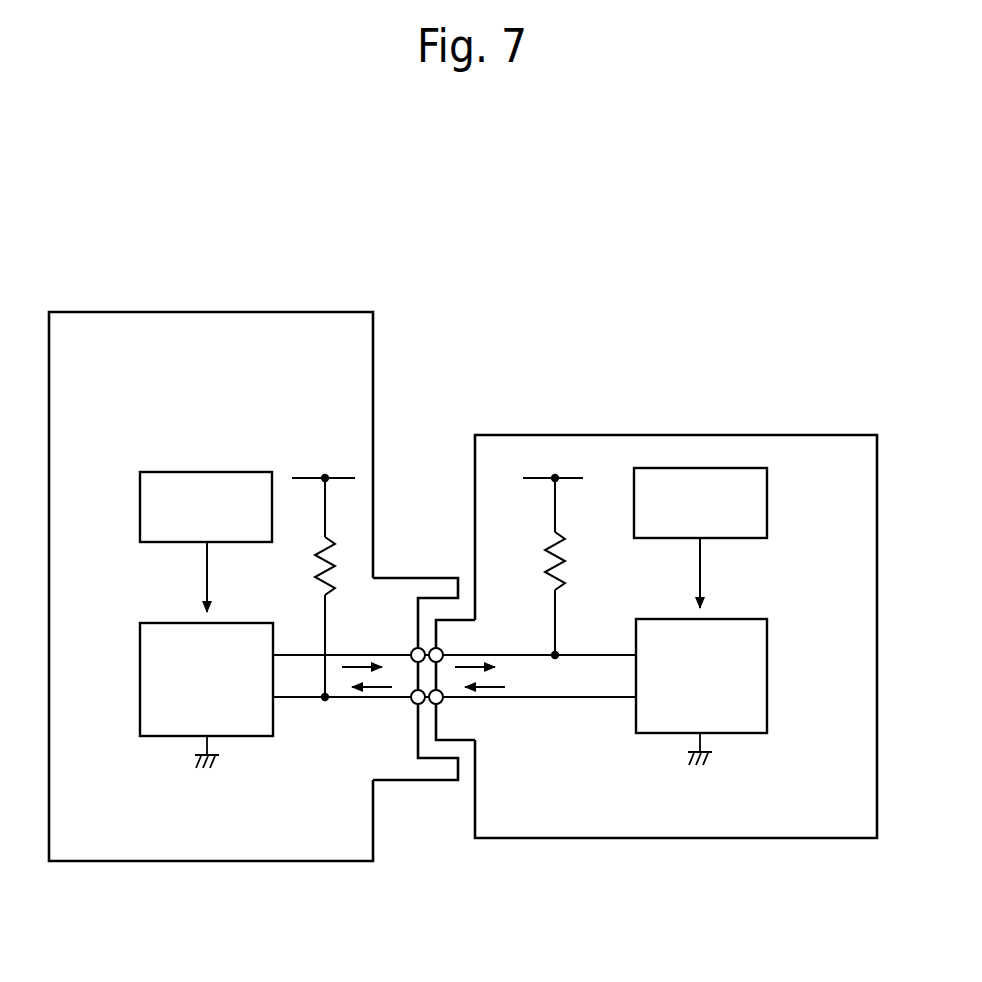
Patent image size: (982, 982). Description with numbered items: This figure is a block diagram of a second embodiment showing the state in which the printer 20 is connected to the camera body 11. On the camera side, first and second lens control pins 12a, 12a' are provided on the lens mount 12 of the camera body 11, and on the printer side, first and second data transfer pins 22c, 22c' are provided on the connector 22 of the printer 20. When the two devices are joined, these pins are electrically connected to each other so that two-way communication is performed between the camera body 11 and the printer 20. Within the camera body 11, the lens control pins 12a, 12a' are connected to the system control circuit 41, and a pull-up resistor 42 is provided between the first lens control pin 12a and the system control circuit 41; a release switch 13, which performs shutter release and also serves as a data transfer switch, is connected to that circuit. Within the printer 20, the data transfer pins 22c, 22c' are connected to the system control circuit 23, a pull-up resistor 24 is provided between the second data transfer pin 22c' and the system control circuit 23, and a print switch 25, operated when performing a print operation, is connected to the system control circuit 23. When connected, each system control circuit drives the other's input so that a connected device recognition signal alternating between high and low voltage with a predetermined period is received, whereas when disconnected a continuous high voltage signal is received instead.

The printer 20 is at (209, 312).
The connector 22 is at (435, 772).
The first data transfer pin 22c is at (385, 630).
The second data transfer pin 22c' is at (387, 721).
The camera body 11 is at (678, 840).
The lens mount 12 is at (466, 740).
The first lens control pin 12a is at (433, 579).
The second lens control pin 12a' is at (479, 716).
The print switch 25 is at (138, 508).
The pull-up resistor 24 is at (316, 566).
The system control circuit 23 is at (138, 679).
The release switch 13 is at (770, 505).
The pull-up resistor 42 is at (566, 557).
The system control circuit 41 is at (770, 678).